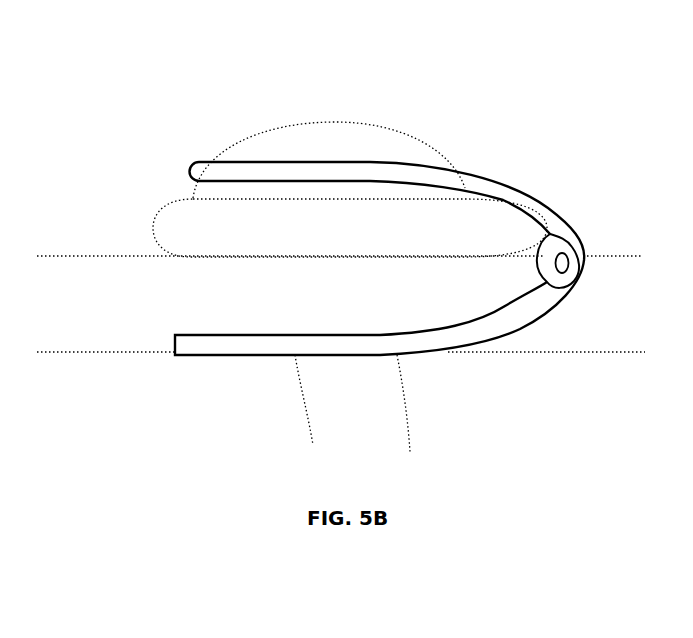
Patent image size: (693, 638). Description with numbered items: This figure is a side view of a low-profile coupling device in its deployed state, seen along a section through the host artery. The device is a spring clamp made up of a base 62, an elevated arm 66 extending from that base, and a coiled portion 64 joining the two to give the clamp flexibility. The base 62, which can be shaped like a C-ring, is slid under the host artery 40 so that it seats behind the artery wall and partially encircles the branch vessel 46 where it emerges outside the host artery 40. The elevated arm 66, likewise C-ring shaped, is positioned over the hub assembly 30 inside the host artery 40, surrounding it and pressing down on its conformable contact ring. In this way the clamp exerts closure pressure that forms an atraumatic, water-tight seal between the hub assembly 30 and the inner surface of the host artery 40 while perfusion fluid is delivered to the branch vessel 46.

The hub assembly 30 is at (406, 235).
The host artery 40 is at (116, 277).
The branch vessel 46 is at (370, 390).
The base 62 is at (412, 352).
The coiled portion 64 is at (567, 252).
The elevated arm 66 is at (250, 162).